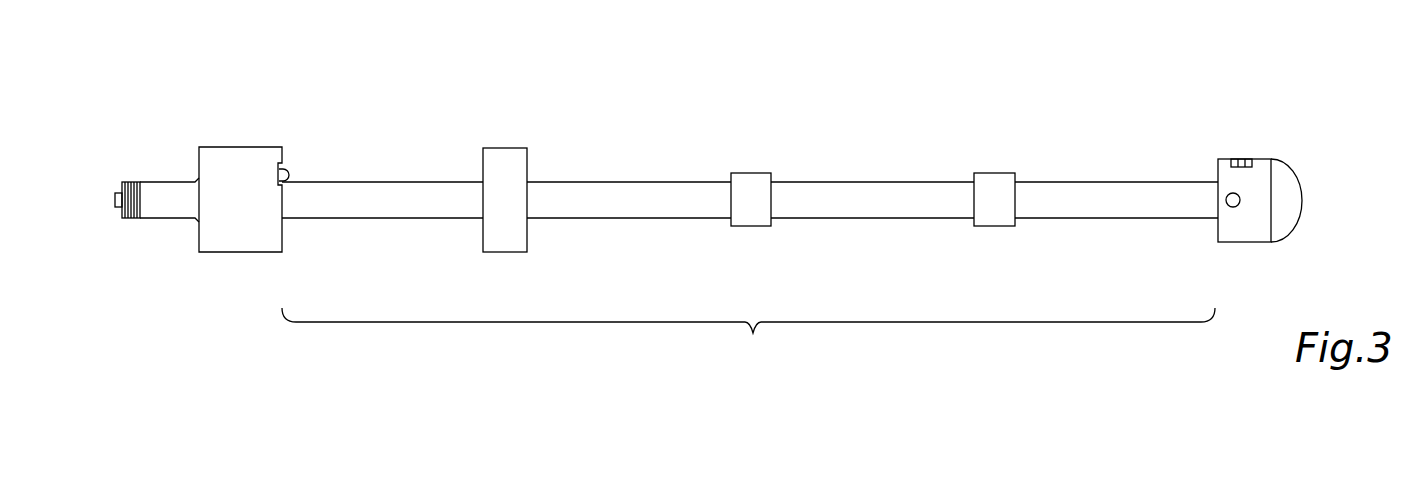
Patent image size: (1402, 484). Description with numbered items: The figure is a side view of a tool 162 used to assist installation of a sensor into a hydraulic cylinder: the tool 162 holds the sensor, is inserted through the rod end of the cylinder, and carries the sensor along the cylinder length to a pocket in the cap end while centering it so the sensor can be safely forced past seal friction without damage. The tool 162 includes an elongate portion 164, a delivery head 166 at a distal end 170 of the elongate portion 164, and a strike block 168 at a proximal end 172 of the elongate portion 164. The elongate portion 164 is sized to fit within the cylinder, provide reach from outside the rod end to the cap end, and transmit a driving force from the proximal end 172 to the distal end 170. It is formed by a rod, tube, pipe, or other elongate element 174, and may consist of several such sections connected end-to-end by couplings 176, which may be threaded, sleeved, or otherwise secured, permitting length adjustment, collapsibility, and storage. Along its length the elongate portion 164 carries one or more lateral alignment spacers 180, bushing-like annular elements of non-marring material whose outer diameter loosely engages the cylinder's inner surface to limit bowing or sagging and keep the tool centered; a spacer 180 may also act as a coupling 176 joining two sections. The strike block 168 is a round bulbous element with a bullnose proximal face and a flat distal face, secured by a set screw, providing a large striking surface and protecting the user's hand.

The tool 162 is at (748, 135).
The elongate portion 164 is at (748, 337).
The delivery head 166 is at (248, 122).
The strike block 168 is at (1260, 132).
The distal end 170 is at (300, 247).
The proximal end 172 is at (1210, 235).
The elongate element 174 is at (873, 181).
The coupling 176 is at (995, 173).
The lateral alignment spacer 180 is at (507, 148).